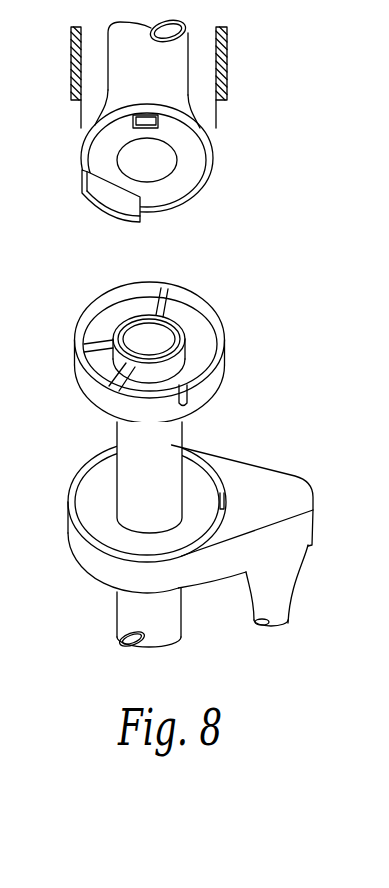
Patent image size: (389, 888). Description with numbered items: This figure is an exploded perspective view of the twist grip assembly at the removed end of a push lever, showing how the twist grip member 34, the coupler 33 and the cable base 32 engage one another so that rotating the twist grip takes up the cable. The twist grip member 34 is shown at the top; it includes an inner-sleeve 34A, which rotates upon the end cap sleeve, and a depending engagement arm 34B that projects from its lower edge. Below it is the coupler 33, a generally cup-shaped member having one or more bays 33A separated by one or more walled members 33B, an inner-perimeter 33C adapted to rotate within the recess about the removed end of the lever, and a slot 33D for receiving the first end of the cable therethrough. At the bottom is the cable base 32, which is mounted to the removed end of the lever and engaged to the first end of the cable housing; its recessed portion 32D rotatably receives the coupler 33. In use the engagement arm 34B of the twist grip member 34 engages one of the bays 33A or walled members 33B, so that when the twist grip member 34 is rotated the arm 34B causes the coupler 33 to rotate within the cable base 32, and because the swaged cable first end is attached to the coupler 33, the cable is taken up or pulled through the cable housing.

The cable base 32 is at (182, 535).
The cup-shaped recess of base member 32D is at (105, 482).
The coupler 33 is at (188, 337).
The bay 33A is at (198, 333).
The walled member 33B is at (150, 297).
The inner-perimeter 33C is at (181, 351).
The slot 33D is at (188, 403).
The twist grip member 34 is at (133, 133).
The inner-sleeve 34A is at (165, 168).
The depending engagement arm 34B is at (92, 200).